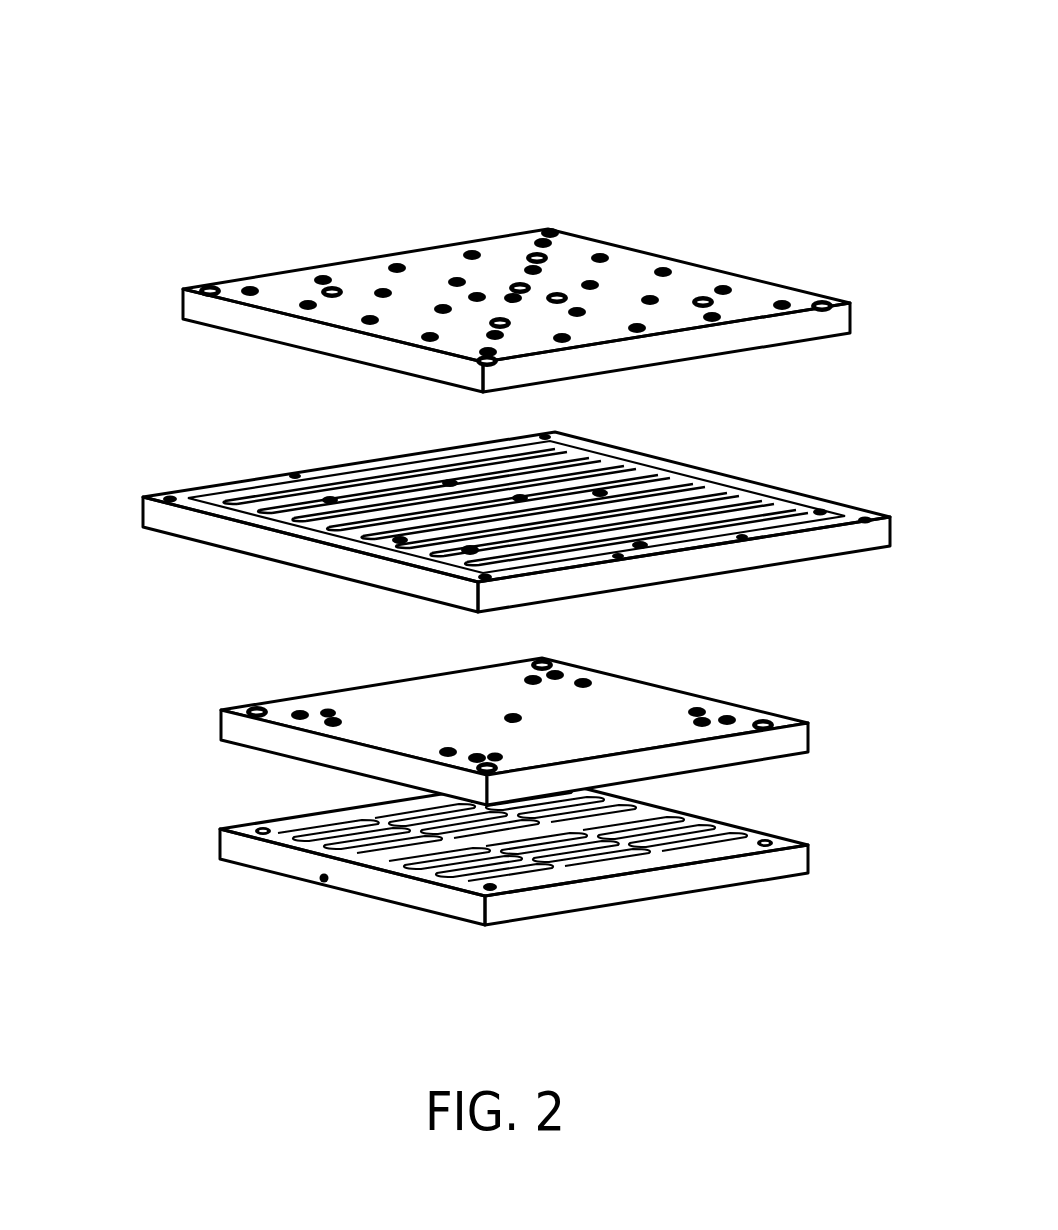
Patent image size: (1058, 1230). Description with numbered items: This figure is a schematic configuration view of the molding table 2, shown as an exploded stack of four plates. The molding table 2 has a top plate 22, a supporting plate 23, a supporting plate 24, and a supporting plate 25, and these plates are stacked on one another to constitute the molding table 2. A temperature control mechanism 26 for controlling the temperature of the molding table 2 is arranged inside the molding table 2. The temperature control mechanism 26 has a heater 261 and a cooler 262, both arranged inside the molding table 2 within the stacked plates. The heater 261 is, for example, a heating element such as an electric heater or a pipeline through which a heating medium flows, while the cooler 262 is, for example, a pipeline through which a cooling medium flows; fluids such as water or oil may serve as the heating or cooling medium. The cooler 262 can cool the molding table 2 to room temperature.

The molding table 2 is at (840, 102).
The top plate 22 is at (853, 311).
The supporting plate 23 is at (548, 530).
The supporting plate 24 is at (810, 740).
The supporting plate 25 is at (547, 835).
The temperature control mechanism 26 is at (503, 663).
The heater 261 is at (262, 507).
The cooler 262 is at (443, 813).